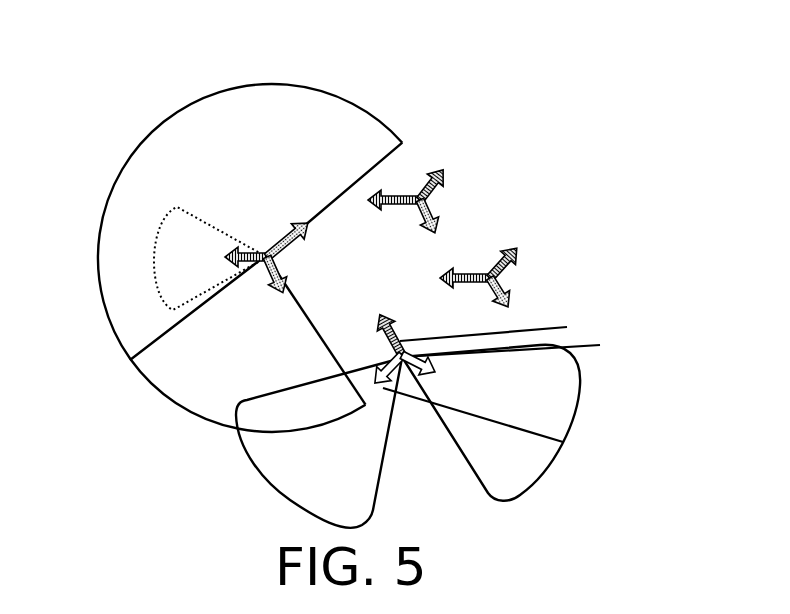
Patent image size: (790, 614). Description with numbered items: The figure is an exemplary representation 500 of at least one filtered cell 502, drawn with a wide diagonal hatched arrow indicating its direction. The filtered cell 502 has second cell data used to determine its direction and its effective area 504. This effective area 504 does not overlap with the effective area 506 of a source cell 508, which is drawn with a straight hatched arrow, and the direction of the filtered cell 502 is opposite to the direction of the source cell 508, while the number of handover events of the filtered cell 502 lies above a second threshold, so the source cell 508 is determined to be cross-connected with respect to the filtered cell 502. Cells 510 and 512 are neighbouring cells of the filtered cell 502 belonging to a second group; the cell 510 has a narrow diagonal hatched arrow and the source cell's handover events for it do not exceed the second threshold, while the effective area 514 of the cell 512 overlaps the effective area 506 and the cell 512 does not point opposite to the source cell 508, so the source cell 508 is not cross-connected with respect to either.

The exemplary representation 500 is at (613, 36).
The filtered cell 502 is at (600, 345).
The effective area of the filtered cell 504 is at (545, 472).
The effective area of the source cell 506 is at (163, 400).
The source cell 508 is at (130, 360).
The cell 510 is at (567, 327).
The cell 512 is at (563, 442).
The effective area of the cell 514 is at (250, 460).